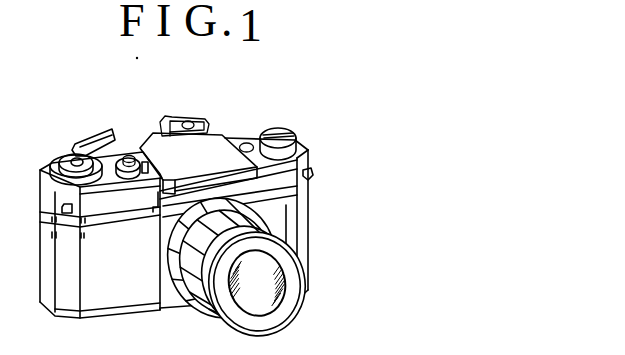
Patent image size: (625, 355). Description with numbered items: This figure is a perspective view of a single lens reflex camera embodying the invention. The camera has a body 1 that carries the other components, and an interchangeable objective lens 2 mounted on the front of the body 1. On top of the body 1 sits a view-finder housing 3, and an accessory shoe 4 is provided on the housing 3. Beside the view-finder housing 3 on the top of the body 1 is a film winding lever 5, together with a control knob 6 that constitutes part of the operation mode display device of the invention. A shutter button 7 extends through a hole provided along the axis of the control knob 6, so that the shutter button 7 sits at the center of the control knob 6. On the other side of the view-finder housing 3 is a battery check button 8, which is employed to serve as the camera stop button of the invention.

The body 1 is at (283, 212).
The interchangeable objective lens 2 is at (277, 268).
The view-finder housing 3 is at (215, 150).
The accessory shoe 4 is at (190, 116).
The film winding lever 5 is at (85, 137).
The control knob 6 is at (146, 162).
The shutter button 7 is at (128, 155).
The battery check button 8 is at (249, 143).